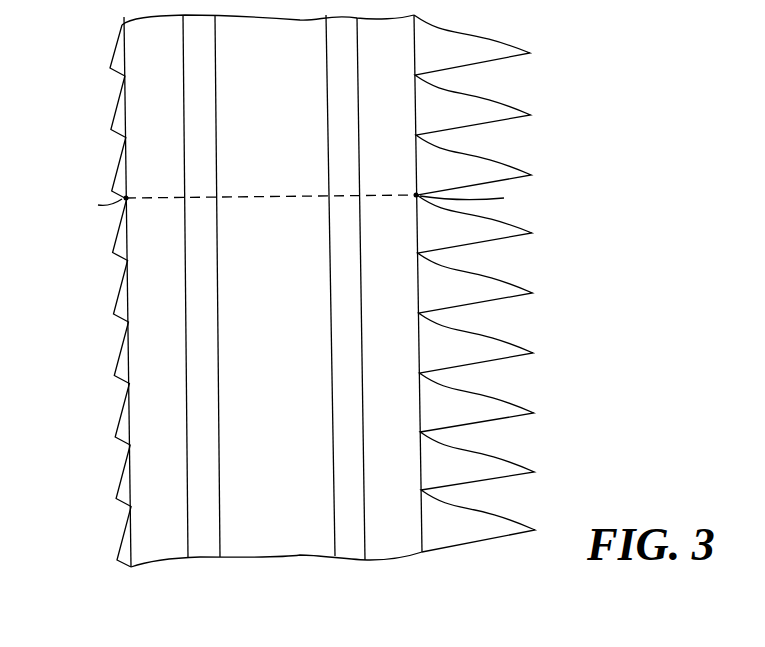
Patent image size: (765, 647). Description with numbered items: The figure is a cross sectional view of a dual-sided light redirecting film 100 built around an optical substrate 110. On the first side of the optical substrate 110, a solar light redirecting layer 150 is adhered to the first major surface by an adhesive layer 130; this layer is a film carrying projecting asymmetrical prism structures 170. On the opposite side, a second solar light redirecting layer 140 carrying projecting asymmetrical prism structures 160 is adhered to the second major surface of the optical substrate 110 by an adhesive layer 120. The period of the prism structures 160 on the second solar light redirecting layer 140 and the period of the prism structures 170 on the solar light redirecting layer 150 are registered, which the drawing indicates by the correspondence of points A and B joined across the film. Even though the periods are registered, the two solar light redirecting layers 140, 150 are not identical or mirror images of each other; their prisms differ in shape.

The dual-sided light redirecting film 100 is at (577, 109).
The optical substrate 110 is at (273, 538).
The adhesive layer 120 is at (203, 542).
The adhesive layer 130 is at (347, 540).
The second solar light redirecting layer 140 is at (160, 545).
The solar light redirecting layer 150 is at (393, 540).
The asymmetrical prism structures 160 is at (128, 502).
The asymmetrical prism structures 170 is at (515, 480).